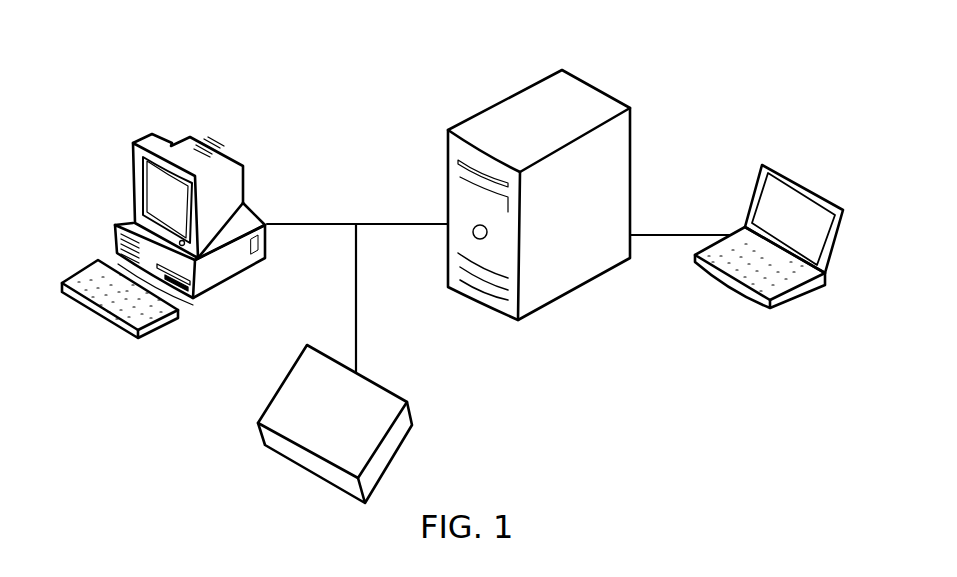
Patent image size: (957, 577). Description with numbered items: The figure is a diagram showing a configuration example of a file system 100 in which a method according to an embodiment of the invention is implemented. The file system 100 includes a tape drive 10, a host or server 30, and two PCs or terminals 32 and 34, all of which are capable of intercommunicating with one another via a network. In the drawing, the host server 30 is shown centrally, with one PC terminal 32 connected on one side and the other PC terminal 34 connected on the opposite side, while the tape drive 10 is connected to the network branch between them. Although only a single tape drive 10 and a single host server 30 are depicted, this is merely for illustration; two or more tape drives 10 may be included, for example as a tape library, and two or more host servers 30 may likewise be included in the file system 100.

The file system 100 is at (437, 25).
The tape drive 10 is at (352, 417).
The host (server) 30 is at (615, 95).
The PC (terminal) 32 is at (213, 148).
The PC (terminal) 34 is at (805, 185).